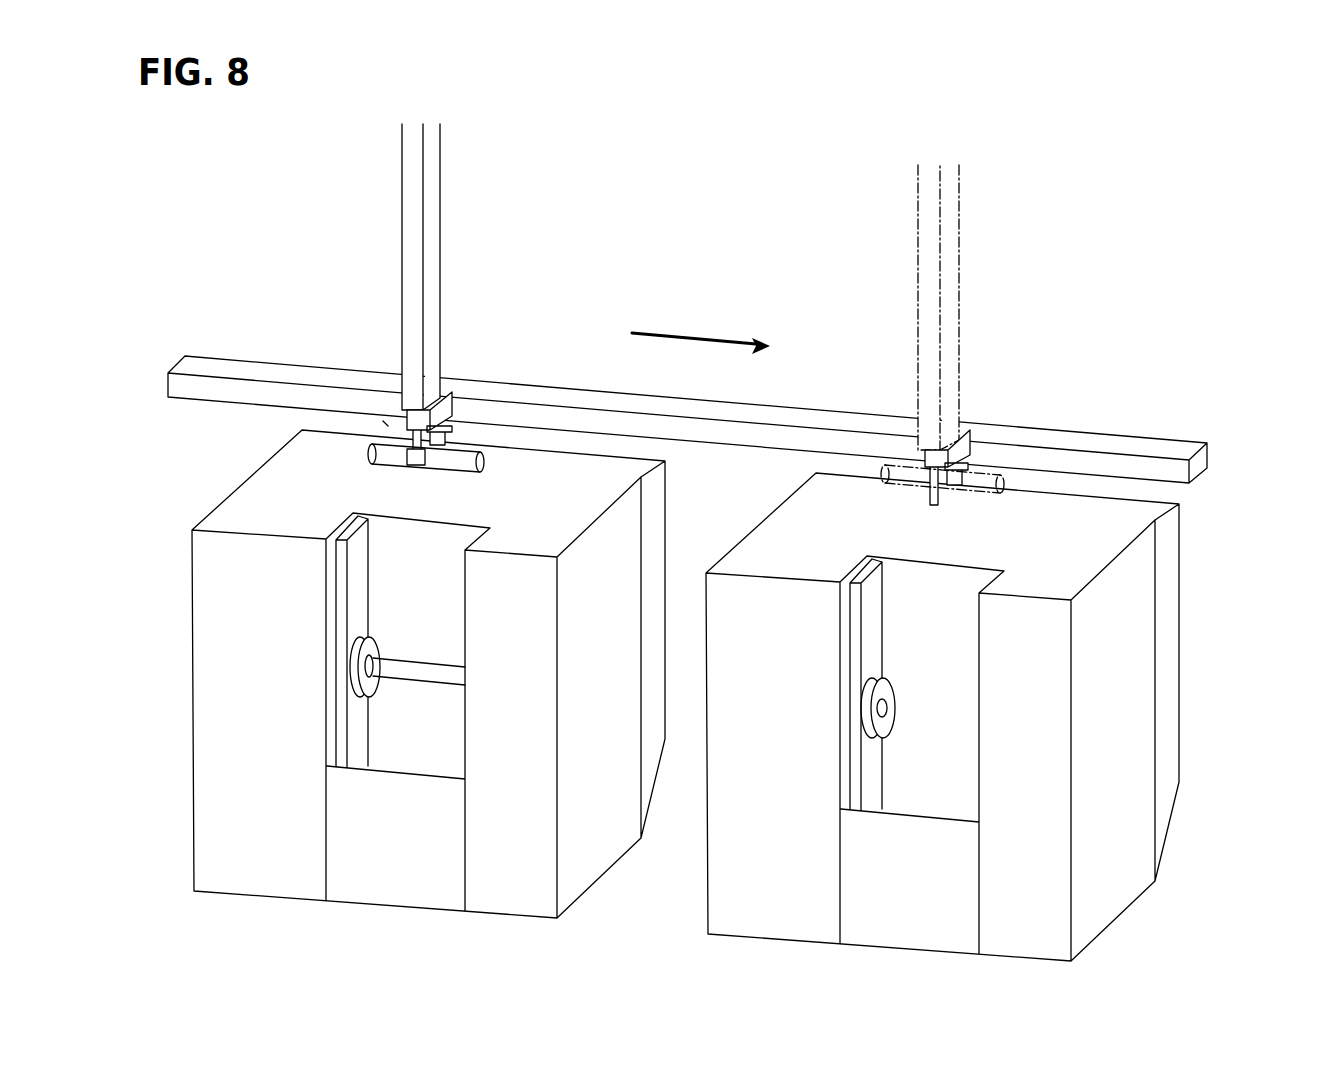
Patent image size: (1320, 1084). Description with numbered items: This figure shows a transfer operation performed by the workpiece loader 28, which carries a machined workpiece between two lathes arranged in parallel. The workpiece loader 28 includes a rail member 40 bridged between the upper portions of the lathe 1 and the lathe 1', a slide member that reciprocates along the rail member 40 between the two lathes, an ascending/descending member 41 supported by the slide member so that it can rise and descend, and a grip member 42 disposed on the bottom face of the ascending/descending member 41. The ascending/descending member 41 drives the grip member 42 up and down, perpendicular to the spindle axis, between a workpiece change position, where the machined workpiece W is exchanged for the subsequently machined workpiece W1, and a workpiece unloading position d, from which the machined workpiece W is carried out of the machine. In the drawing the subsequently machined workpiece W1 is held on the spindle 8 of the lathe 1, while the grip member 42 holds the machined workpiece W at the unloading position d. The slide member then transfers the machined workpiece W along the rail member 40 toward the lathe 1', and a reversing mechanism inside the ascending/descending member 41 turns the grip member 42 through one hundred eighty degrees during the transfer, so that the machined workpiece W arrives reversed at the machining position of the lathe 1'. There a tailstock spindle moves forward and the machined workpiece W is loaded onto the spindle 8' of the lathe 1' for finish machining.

The lathe 1 is at (391, 674).
The lathe 1' is at (1000, 717).
The spindle 8 is at (377, 629).
The spindle 8' is at (904, 675).
The workpiece loader 28 is at (697, 314).
The rail member 40 is at (1097, 433).
The ascending/descending member 41 is at (440, 204).
The grip member 42 is at (452, 392).
The machined workpiece W is at (462, 473).
The subsequently machined workpiece W1 is at (419, 709).
The workpiece unloading position d is at (385, 423).